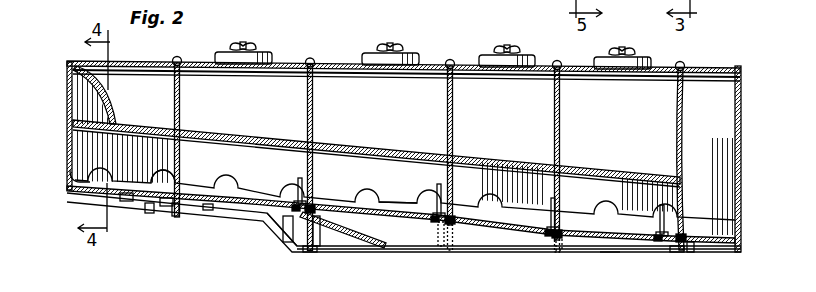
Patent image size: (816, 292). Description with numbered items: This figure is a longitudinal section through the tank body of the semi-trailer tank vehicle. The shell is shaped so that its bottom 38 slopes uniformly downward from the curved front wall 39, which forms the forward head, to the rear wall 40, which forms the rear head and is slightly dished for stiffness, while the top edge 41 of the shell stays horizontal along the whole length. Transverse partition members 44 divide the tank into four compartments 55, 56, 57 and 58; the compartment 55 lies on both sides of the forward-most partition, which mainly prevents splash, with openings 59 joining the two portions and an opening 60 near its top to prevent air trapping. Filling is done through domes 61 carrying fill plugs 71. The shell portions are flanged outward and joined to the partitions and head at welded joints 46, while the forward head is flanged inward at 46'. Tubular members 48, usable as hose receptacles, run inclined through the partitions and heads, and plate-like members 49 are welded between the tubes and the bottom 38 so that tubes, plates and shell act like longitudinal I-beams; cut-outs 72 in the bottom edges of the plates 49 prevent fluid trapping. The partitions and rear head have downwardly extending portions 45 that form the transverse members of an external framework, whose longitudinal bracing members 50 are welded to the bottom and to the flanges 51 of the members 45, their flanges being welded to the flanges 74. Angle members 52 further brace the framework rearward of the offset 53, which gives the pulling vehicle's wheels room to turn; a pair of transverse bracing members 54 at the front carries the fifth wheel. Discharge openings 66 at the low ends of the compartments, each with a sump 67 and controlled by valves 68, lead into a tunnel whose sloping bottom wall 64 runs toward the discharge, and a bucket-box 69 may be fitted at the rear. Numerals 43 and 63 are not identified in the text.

The bottom portion 38 is at (385, 201).
The front wall 39 is at (67, 134).
The rear wall 40 is at (688, 150).
The top edge 41 is at (290, 65).
The bottom rail end 43 is at (607, 272).
The partition members 44 is at (180, 123).
The downwardly extending portions 45 is at (180, 216).
The welded joint 46 is at (428, 141).
The inward flange 46' is at (70, 94).
The tubular members 48 is at (198, 140).
The plate-like members 49 is at (67, 170).
The longitudinally extending bracing members 50 is at (72, 193).
The flanges 51 is at (150, 214).
The angle members 52 is at (375, 250).
The offset 53 is at (275, 234).
The transverse bracing members 54 is at (126, 205).
The compartment 55 is at (186, 105).
The compartment 56 is at (388, 96).
The compartment 57 is at (511, 145).
The compartment 58 is at (644, 149).
The openings 59 is at (163, 171).
The opening 60 is at (175, 76).
The domes 61 is at (268, 54).
The diagonal brace 63 is at (356, 242).
The sloping bottom wall 64 is at (500, 252).
The discharge openings 66 is at (306, 202).
The sump 67 is at (295, 203).
The valves 68 is at (306, 190).
The bucket-box 69 is at (725, 155).
The fill plugs 71 is at (255, 40).
The openings 72 is at (100, 170).
The flanges 74 is at (308, 250).